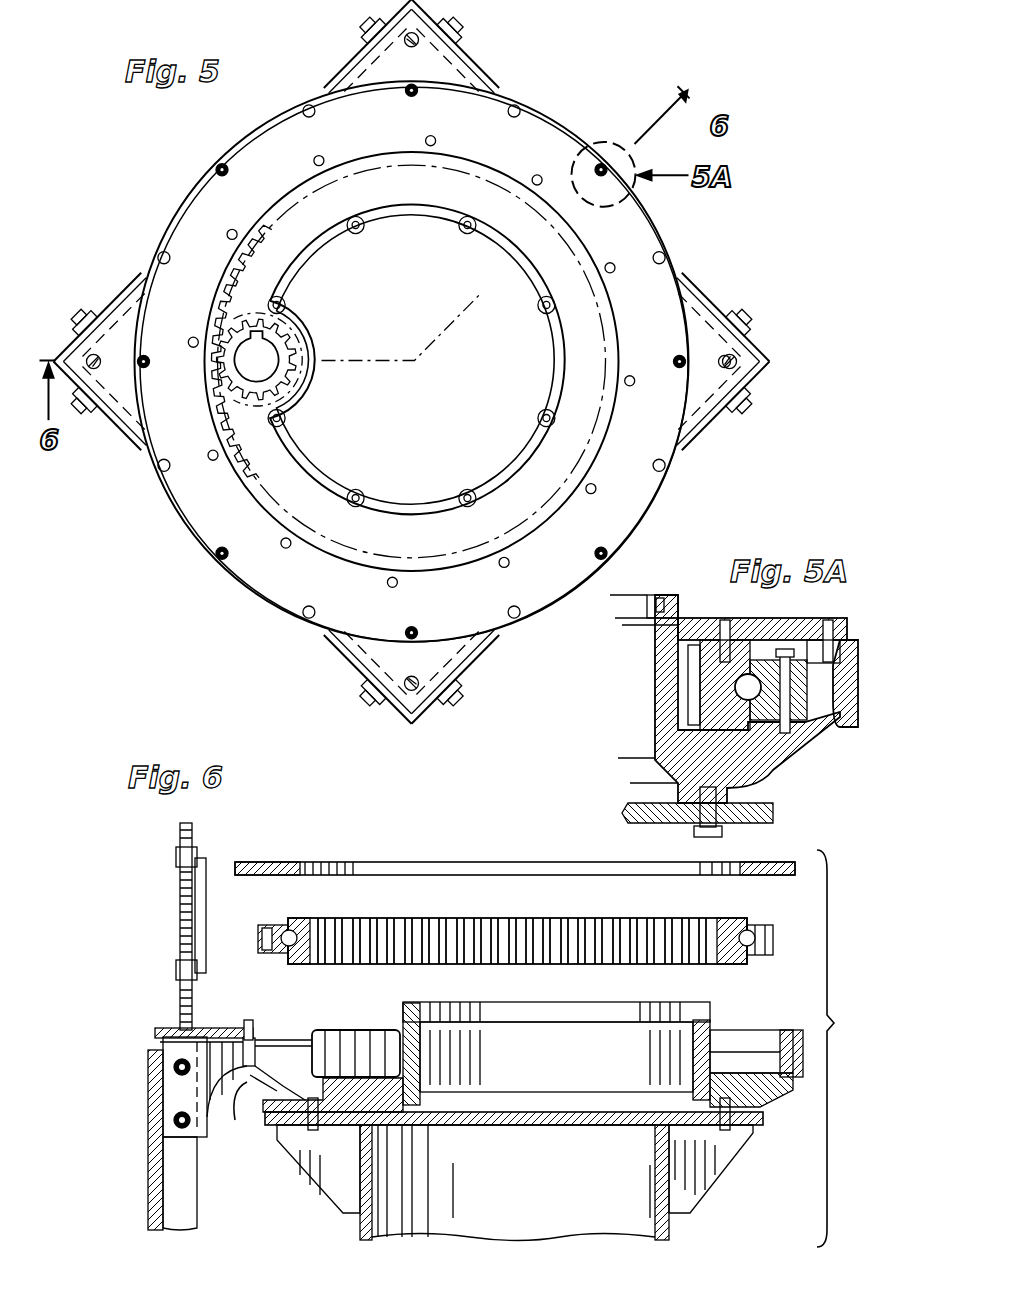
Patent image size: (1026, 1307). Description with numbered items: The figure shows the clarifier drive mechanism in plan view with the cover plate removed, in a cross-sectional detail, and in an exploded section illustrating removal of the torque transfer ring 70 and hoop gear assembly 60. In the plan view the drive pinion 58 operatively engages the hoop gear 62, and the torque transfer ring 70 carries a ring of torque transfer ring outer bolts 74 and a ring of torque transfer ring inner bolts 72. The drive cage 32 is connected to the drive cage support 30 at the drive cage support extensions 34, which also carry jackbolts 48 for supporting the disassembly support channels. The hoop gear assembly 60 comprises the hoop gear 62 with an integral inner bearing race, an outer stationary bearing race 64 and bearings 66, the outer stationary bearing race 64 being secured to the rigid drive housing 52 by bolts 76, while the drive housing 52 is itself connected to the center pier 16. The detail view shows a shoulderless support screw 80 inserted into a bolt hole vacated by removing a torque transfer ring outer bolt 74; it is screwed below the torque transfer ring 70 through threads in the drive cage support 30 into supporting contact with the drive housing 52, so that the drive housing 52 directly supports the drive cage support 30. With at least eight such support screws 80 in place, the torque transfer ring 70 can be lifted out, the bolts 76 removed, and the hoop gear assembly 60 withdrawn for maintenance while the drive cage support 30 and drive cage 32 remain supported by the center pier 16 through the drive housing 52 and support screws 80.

In FIG. 6, the center pier 16 is at (360, 1230).
In FIG. 5, the drive cage support 30 is at (668, 230).
In FIG. 5A, the drive cage support 30 is at (862, 688).
In FIG. 6, the drive cage support 30 is at (160, 1030).
In FIG. 5, the drive cage 32 is at (762, 376).
In FIG. 6, the drive cage 32 is at (200, 1212).
In FIG. 5, the drive cage support extensions 34 is at (706, 348).
In FIG. 6, the drive cage support extensions 34 is at (232, 1110).
In FIG. 5, the jackbolts 48 is at (728, 358).
In FIG. 5A, the drive housing 52 is at (780, 775).
In FIG. 6, the drive housing 52 is at (290, 1097).
In FIG. 5, the drive pinion 58 is at (238, 367).
In FIG. 6, the drive pinion 58 is at (363, 1035).
In FIG. 5, the hoop gear assembly 60 is at (228, 458).
In FIG. 6, the hoop gear assembly 60 is at (485, 916).
In FIG. 5, the hoop gear 62 is at (214, 332).
In FIG. 6, the hoop gear 62 is at (306, 964).
In FIG. 6, the outer stationary bearing race 64 is at (278, 951).
In FIG. 6, the bearings 66 is at (283, 930).
In FIG. 5, the torque transfer ring 70 is at (490, 108).
In FIG. 5A, the torque transfer ring 70 is at (775, 618).
In FIG. 6, the torque transfer ring 70 is at (405, 865).
In FIG. 5, the torque transfer ring inner bolts 72 is at (424, 140).
In FIG. 5, the torque transfer ring outer bolts 74 is at (214, 168).
In FIG. 5A, the bolts 76 is at (795, 726).
In FIG. 5A, the support screw 80 is at (853, 650).
In FIG. 6, the support screw 80 is at (247, 1028).